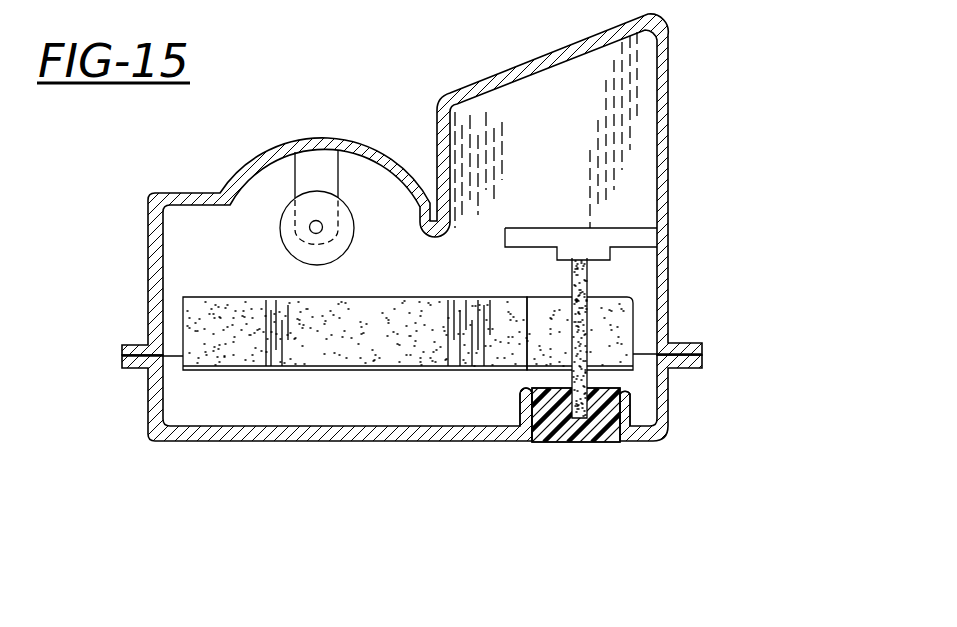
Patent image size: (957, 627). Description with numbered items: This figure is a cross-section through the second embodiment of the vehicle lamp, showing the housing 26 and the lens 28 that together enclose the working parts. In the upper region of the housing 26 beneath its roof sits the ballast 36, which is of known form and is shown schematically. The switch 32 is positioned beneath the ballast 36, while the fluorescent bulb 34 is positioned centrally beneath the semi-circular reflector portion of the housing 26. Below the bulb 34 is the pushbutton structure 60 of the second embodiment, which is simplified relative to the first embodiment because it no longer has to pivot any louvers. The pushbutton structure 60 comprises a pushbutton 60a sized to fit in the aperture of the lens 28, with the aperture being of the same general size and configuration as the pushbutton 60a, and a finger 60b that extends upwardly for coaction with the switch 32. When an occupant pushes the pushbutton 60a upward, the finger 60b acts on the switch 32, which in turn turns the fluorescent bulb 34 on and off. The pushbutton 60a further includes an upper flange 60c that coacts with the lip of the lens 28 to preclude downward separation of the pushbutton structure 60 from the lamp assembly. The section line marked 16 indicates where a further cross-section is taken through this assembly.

The section line 16- 16 is at (317, 127).
The housing 26 is at (690, 100).
The lens 28 is at (182, 442).
The switch 32 is at (607, 248).
The fluorescent bulb 34 is at (275, 228).
The ballast 36 is at (556, 156).
The pushbutton structure 60 is at (545, 450).
The pushbutton 60a is at (622, 447).
The finger 60b is at (598, 346).
The upper flange 60c is at (530, 400).